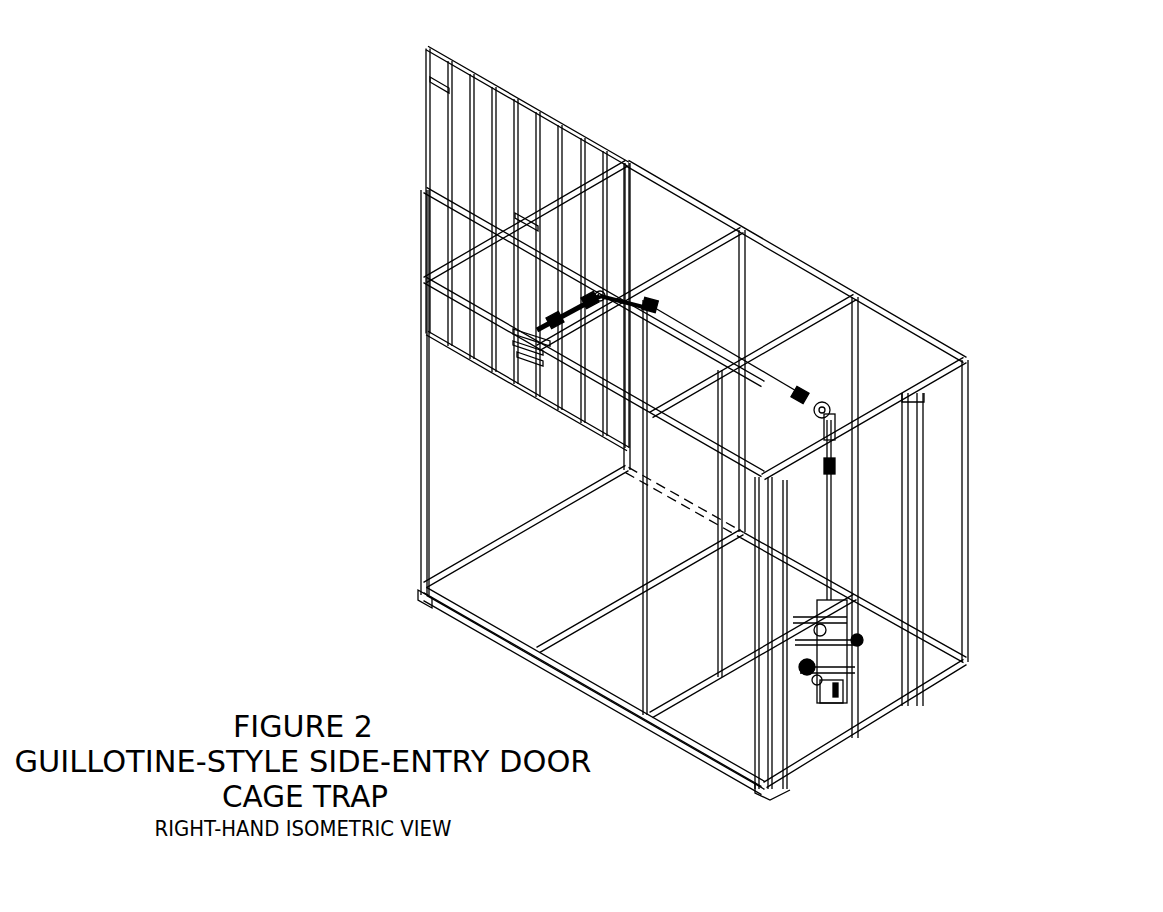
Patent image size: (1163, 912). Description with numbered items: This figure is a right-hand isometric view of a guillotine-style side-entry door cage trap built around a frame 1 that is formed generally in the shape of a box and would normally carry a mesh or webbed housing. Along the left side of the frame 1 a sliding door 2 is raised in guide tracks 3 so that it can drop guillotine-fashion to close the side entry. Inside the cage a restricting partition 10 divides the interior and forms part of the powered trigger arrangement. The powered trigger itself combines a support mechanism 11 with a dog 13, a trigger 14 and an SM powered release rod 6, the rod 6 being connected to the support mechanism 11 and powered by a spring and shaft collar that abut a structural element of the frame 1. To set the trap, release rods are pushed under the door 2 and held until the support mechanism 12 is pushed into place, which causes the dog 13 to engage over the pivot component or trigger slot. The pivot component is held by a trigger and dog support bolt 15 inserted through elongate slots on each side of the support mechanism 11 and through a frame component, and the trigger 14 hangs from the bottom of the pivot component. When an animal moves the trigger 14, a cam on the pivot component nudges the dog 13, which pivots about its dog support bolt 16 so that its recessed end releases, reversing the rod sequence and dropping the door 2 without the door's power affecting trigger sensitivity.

The frame 1 is at (665, 178).
The sliding door 2 is at (422, 102).
The door guide track 3 is at (790, 492).
The SM powered release rod 6 is at (842, 400).
The restricting partition 10 is at (682, 684).
The support mechanism 11 is at (970, 609).
The support mechanism 12 is at (973, 596).
The dog 13 is at (980, 593).
The trigger 14 is at (999, 615).
The trigger and dog support bolt 15 is at (979, 651).
The dog support bolt 16 is at (983, 678).